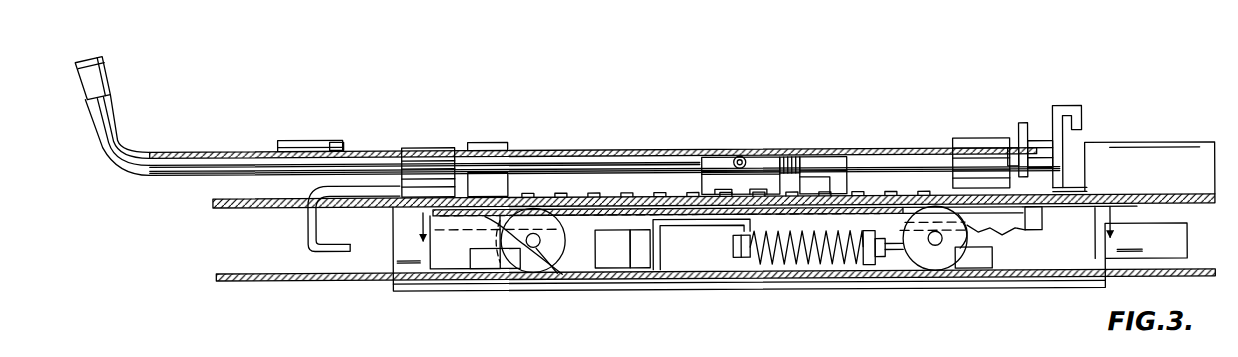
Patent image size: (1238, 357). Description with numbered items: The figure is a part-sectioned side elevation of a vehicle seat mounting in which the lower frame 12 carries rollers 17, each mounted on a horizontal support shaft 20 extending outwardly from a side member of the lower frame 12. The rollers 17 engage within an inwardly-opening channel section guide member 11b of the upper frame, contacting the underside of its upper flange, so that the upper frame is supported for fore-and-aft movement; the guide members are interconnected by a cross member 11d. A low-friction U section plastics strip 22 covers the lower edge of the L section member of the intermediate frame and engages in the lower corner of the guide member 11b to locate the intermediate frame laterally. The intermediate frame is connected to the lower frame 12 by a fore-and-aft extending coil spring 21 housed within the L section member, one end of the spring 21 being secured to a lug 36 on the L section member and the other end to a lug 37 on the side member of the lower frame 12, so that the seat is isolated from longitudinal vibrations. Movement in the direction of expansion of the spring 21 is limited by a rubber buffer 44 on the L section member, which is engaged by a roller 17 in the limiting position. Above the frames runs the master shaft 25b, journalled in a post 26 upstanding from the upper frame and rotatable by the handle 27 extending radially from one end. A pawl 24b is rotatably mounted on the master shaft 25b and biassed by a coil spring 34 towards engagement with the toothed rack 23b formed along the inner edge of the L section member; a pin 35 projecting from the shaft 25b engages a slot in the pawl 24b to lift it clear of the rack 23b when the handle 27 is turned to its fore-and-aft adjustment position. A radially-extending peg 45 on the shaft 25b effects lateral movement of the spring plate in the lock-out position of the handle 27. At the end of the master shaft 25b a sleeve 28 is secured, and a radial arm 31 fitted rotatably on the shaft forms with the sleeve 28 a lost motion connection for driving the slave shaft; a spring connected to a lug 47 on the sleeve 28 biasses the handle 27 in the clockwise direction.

The handle 27 is at (96, 84).
The master shaft 25b is at (200, 159).
The post 26 is at (426, 146).
The toothed rack 23b is at (538, 194).
The pawl 24b is at (713, 160).
The pin 35 is at (740, 157).
The coil spring 34 is at (790, 157).
The peg 45 is at (852, 165).
The radial arm 31 is at (1022, 130).
The sleeve 28 is at (1050, 145).
The lug 47 is at (1066, 112).
The cross member 11d is at (1145, 162).
The guide member 11b is at (273, 279).
The lower frame 12 is at (424, 293).
The plastics strip 22 is at (490, 268).
The roller 17 is at (537, 262).
The support shaft 20 is at (560, 270).
The rubber buffer 44 is at (640, 262).
The lug 36 is at (748, 262).
The coil spring 21 is at (820, 262).
The lug 37 is at (870, 264).